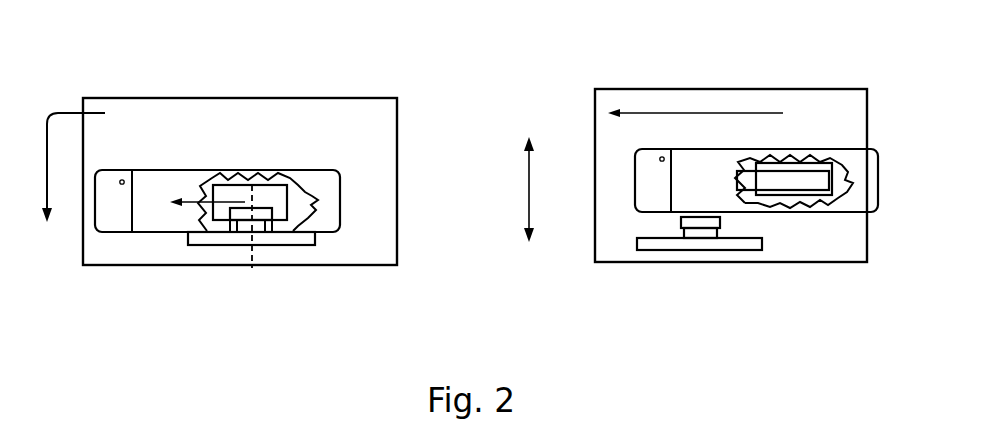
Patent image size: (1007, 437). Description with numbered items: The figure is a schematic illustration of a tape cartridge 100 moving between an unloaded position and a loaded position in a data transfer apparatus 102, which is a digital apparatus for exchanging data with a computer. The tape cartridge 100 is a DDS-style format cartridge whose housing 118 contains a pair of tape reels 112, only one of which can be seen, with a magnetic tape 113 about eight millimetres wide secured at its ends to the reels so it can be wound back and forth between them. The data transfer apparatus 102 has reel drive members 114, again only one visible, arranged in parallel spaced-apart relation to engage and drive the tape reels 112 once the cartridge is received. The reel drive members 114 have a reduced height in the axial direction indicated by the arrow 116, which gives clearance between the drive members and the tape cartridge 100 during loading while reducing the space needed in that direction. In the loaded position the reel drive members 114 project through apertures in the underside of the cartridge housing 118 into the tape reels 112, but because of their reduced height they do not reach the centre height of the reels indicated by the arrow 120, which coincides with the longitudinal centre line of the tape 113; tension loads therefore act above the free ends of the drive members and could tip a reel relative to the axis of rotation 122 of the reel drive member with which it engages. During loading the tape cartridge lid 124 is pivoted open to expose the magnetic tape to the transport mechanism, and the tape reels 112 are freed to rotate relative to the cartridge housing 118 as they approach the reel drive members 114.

The tape cartridge 100 is at (318, 170).
The data transfer apparatus 102 is at (108, 266).
The tape reel 112 is at (270, 190).
The magnetic tape 113 is at (810, 183).
The reel drive member 114 is at (707, 234).
The arrow indicating axial direction 116 is at (528, 205).
The tape cartridge housing 118 is at (342, 217).
The arrow indicating centre height of tape reels 120 is at (192, 197).
The axis of rotation of the tape reel 122 is at (254, 274).
The tape cartridge lid 124 is at (652, 177).